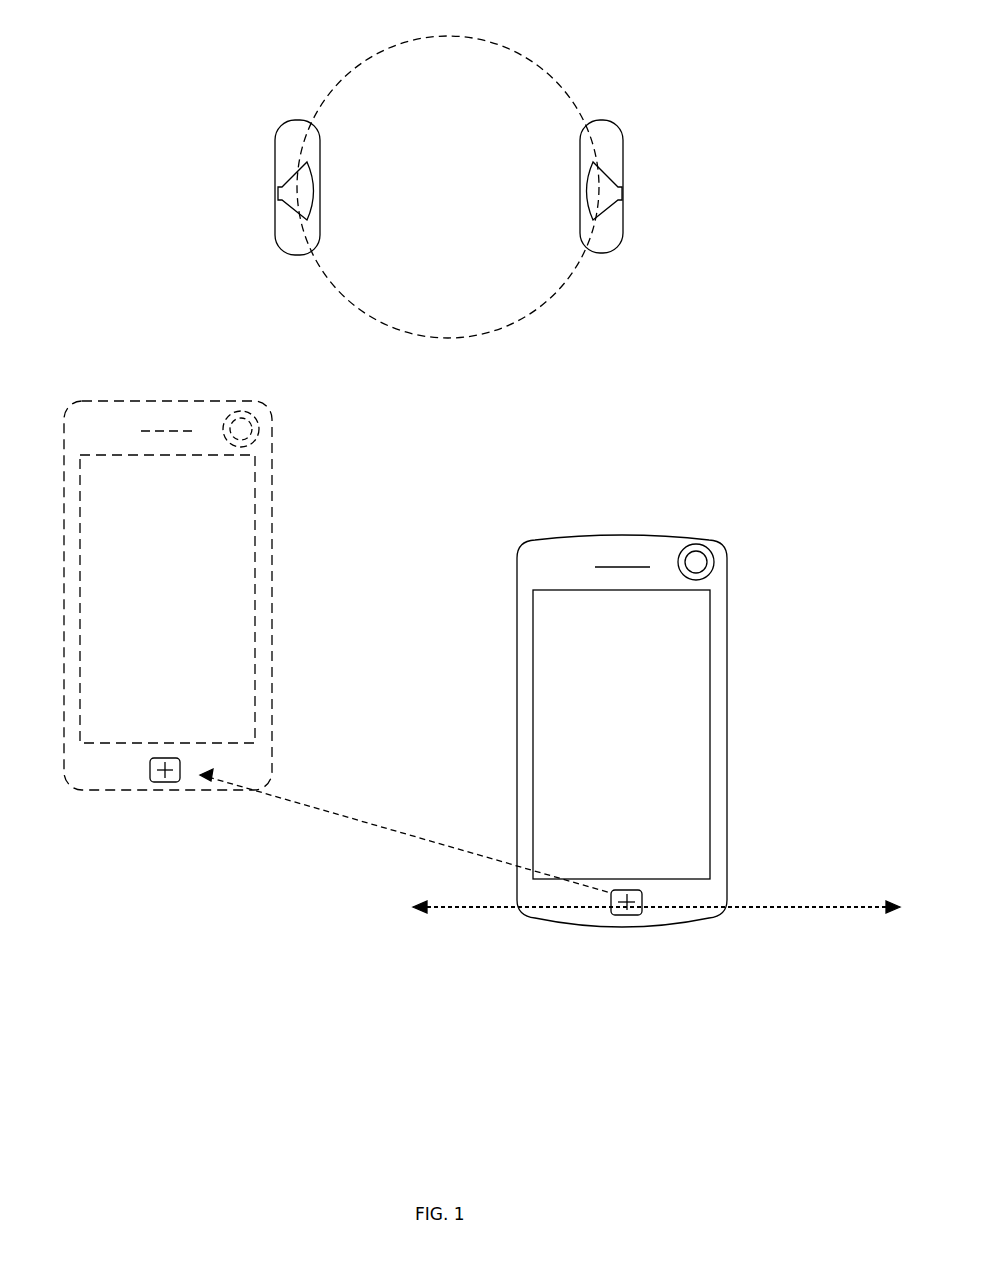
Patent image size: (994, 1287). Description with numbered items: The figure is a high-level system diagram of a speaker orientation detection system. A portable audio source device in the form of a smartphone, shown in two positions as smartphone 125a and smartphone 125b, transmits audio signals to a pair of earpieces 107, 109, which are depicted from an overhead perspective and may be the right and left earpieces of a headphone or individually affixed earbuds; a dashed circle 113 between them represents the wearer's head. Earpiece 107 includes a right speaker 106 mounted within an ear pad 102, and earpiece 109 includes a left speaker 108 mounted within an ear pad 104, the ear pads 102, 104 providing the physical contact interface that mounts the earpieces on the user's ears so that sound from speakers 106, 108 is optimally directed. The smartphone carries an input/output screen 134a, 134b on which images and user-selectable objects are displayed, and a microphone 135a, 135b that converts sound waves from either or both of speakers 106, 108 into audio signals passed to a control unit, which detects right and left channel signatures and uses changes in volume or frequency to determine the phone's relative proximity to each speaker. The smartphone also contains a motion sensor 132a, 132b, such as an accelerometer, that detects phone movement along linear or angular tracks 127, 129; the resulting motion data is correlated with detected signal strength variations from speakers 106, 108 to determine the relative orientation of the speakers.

The ear pad 102 is at (297, 120).
The ear pad 104 is at (600, 120).
The right-hand speaker 106 is at (265, 148).
The earpiece 107 is at (245, 165).
The left-hand speaker 108 is at (620, 228).
The earpiece 109 is at (655, 159).
The user head 113 is at (578, 268).
The smartphone 125a is at (656, 726).
The smartphone 125b is at (202, 596).
The track 127 is at (386, 828).
The track 129 is at (785, 907).
The motion sensor 132a is at (627, 915).
The motion sensor 132b is at (165, 782).
The input/output screen 134a is at (710, 710).
The input/output screen 134b is at (255, 580).
The microphone 135a is at (705, 572).
The microphone 135b is at (250, 440).